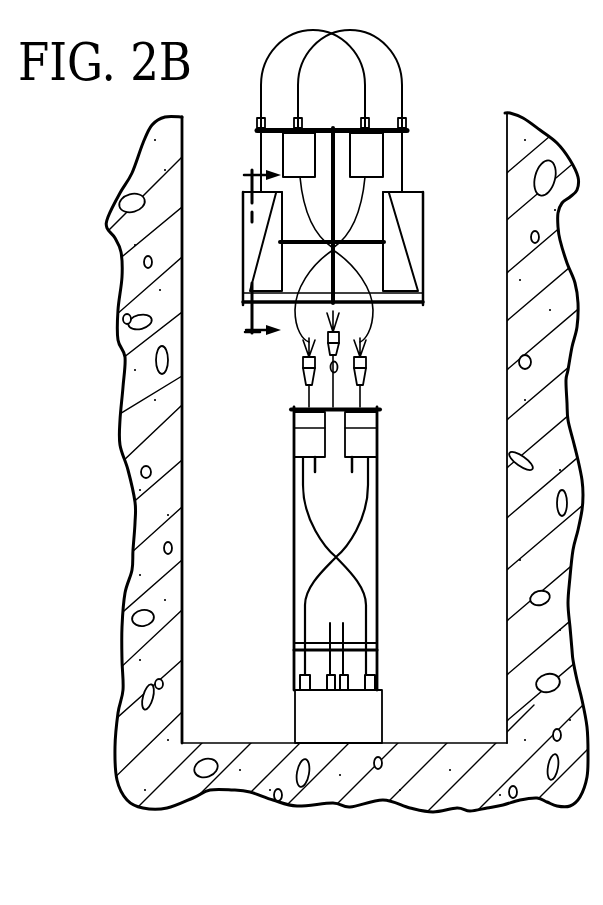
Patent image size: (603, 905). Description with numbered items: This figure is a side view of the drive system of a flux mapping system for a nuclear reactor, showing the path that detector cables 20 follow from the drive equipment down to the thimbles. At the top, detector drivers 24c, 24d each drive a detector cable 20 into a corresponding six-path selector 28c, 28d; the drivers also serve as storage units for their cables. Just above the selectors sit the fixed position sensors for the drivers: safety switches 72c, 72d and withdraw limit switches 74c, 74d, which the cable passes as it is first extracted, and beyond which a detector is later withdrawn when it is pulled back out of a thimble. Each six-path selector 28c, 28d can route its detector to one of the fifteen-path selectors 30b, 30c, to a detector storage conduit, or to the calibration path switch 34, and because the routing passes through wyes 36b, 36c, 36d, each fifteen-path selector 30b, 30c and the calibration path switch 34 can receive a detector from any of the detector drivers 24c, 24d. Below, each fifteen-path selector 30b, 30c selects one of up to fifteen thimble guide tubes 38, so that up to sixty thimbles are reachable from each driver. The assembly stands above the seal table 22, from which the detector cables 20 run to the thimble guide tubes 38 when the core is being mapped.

The detector cables 20 is at (390, 42).
The seal table 22 is at (305, 720).
The detector driver 24c is at (254, 246).
The detector driver 24d is at (412, 247).
The 6-path selector 28c is at (378, 153).
The 6-path selector 28d is at (288, 153).
The 15-path selector 30b is at (306, 445).
The 15-path selector 30c is at (365, 445).
The calibration path switch 34 is at (330, 368).
The wye 36b is at (341, 335).
The wye 36c is at (306, 377).
The wye 36d is at (363, 377).
The thimble guide tubes 38 is at (274, 660).
The safety switch 72c is at (257, 122).
The safety switch 72d is at (406, 122).
The withdraw limit switch 74c is at (365, 118).
The withdraw limit switch 74d is at (300, 88).